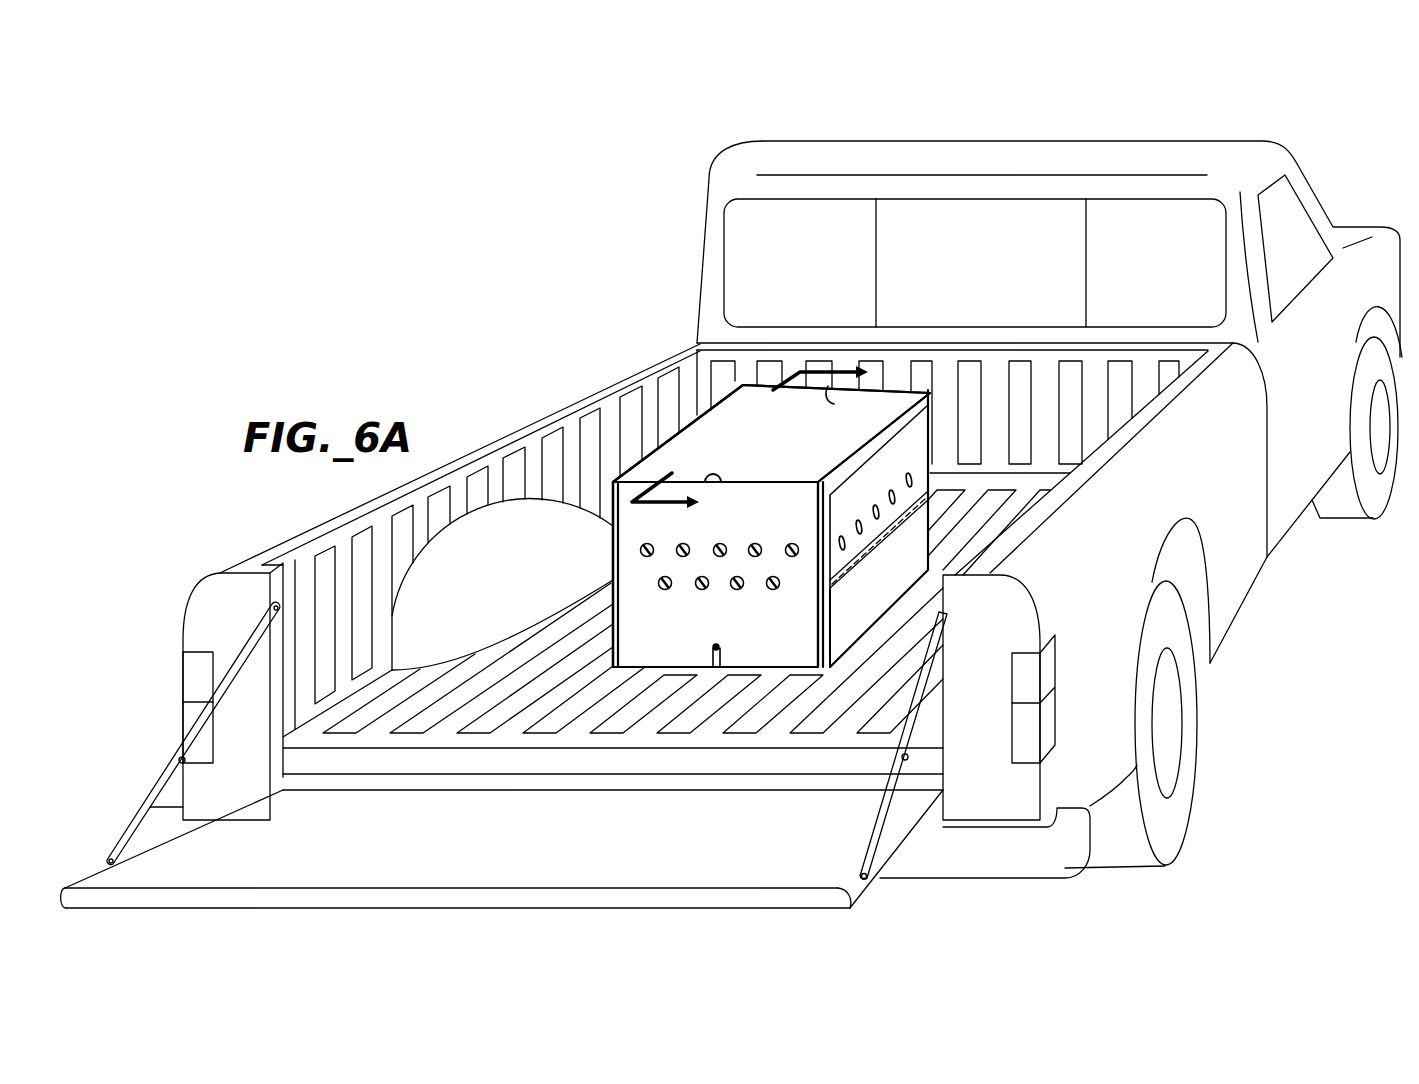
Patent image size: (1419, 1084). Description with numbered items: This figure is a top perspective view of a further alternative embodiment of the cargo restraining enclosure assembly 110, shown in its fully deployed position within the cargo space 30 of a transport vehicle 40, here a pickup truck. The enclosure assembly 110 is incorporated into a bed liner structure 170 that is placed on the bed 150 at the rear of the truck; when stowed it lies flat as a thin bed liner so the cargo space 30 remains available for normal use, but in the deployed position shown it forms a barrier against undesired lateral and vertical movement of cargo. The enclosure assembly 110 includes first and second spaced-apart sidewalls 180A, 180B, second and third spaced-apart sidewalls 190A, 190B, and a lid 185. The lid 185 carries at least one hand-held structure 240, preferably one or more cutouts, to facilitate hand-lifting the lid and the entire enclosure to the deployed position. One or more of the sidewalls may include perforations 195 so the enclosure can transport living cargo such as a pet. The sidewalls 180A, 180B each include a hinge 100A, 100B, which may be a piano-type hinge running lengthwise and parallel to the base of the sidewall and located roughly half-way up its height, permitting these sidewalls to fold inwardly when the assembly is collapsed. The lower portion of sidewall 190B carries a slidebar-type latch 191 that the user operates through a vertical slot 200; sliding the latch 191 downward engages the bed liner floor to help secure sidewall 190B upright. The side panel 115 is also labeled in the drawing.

The transport vehicle 40 is at (1326, 170).
The cargo space 30 is at (382, 518).
The enclosure assembly 110 is at (761, 482).
The sidewall 190B is at (930, 443).
The lid 185 is at (776, 426).
The hand-held structure 240 is at (722, 478).
The side panel 115 is at (855, 468).
The sidewall 180B is at (600, 545).
The perforations 195 is at (720, 542).
The hinge 100B is at (612, 579).
The hinge 100A is at (840, 582).
The sidewall 180A is at (878, 592).
The sidewall 190A is at (688, 646).
The slidebar-type latch 191 is at (718, 645).
The vertical slot 200 is at (722, 662).
The bed liner structure 170 is at (392, 766).
The bed 150 is at (497, 774).